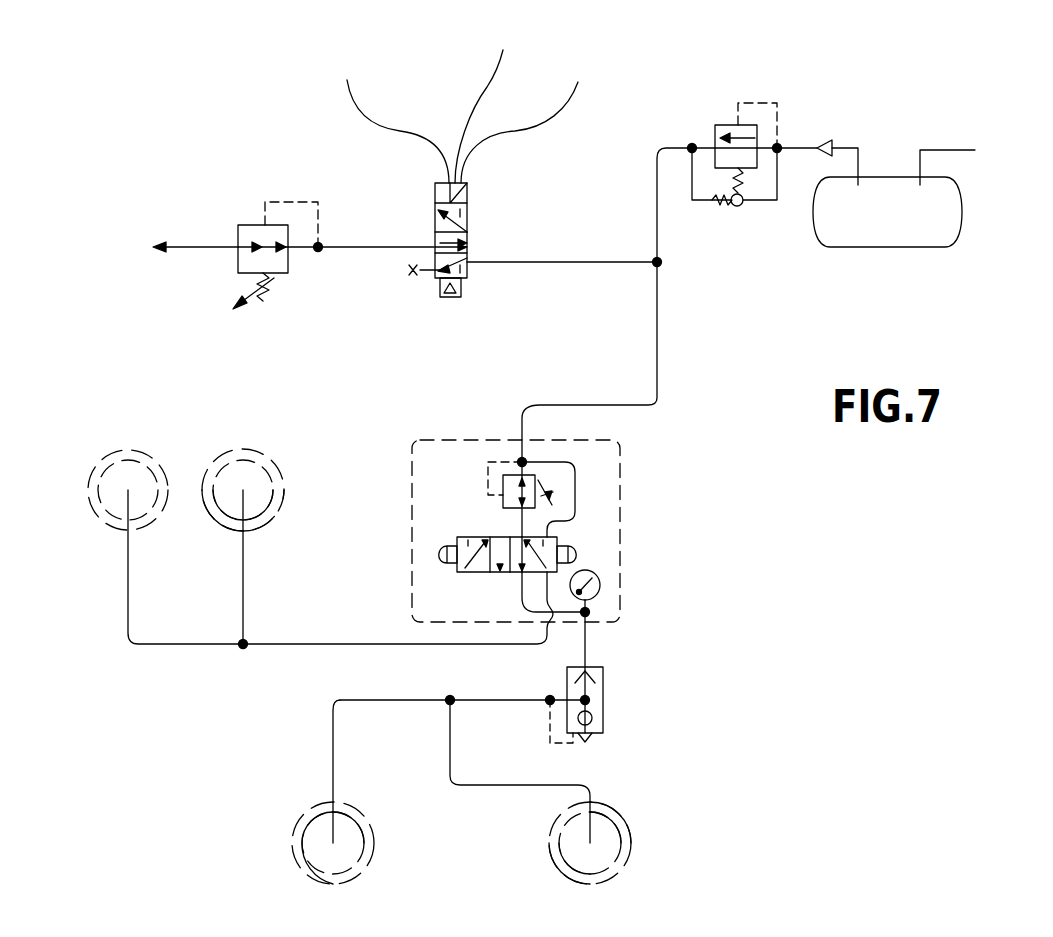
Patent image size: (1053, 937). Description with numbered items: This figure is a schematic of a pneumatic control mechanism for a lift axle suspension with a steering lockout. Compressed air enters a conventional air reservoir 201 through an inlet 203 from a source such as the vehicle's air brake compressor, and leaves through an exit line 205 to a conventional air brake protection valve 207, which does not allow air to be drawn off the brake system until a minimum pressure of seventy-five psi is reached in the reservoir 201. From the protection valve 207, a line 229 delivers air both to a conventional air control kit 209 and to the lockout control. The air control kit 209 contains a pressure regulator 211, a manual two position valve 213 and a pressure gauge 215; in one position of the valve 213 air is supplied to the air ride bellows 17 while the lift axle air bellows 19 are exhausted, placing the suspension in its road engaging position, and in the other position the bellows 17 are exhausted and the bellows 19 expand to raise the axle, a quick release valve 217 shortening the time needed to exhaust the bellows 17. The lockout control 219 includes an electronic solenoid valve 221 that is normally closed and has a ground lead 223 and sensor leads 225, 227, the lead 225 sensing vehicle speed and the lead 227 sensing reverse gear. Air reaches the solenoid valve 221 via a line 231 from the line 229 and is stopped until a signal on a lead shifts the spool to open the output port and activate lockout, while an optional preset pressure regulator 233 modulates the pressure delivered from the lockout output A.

The air ride bellows 17 is at (373, 837).
The lift axle air bellows 19 is at (145, 470).
The air reservoir 201 is at (890, 247).
The inlet 203 is at (978, 161).
The exit line 205 is at (842, 146).
The air brake protection valve 207 is at (739, 208).
The air control kit 209 is at (620, 546).
The pressure regulator 211 is at (538, 480).
The manual two position valve 213 is at (566, 537).
The pressure gauge 215 is at (600, 592).
The quick release valve 217 is at (603, 708).
The control 219 is at (484, 232).
The electronic solenoid valve 221 is at (440, 296).
The ground lead 223 is at (404, 130).
The sensor lead 225 is at (522, 130).
The sensor lead 227 is at (497, 99).
The line 229 is at (658, 306).
The line 231 is at (576, 262).
The pressure regulator 233 is at (238, 214).
The air outlet A is at (282, 248).